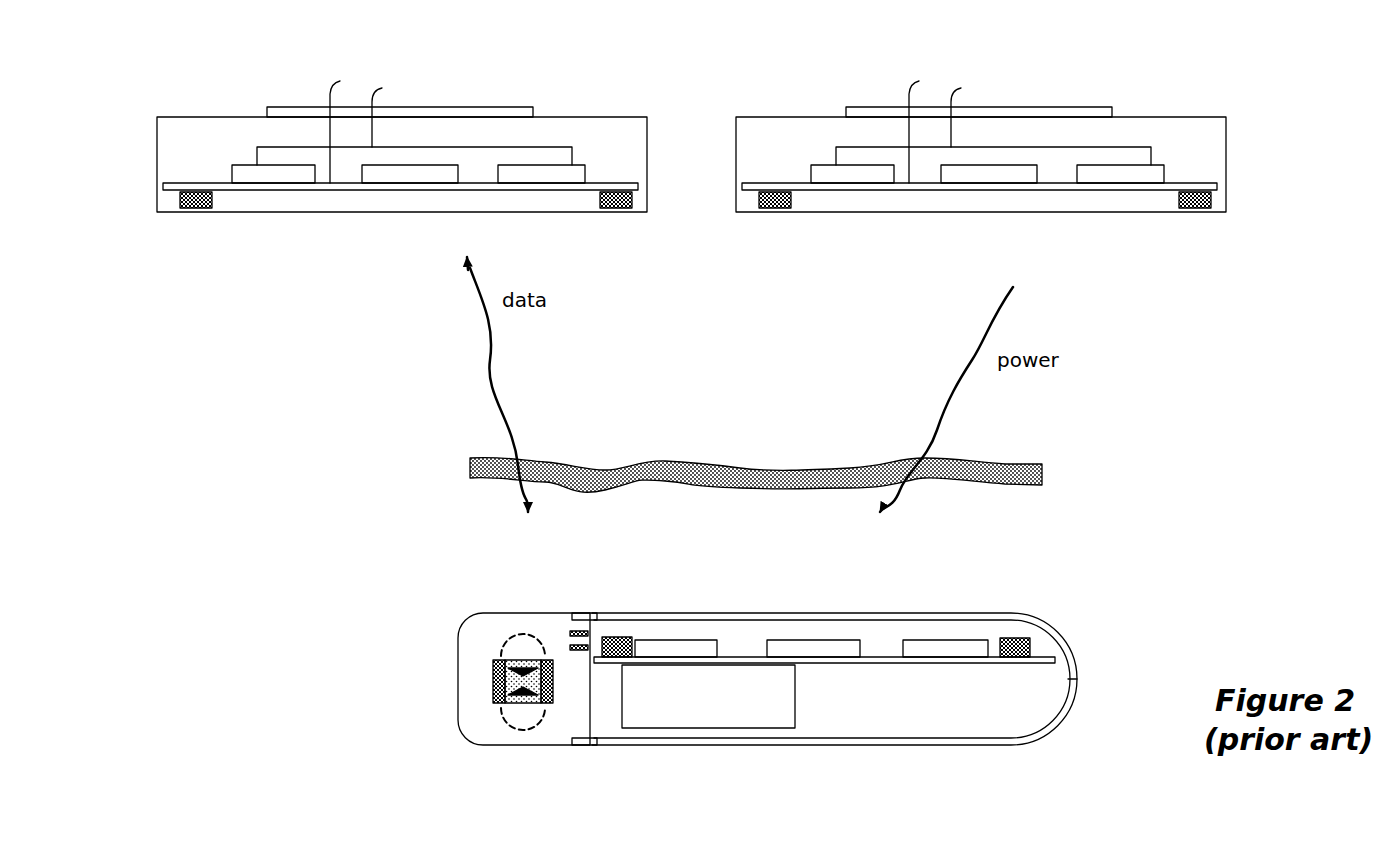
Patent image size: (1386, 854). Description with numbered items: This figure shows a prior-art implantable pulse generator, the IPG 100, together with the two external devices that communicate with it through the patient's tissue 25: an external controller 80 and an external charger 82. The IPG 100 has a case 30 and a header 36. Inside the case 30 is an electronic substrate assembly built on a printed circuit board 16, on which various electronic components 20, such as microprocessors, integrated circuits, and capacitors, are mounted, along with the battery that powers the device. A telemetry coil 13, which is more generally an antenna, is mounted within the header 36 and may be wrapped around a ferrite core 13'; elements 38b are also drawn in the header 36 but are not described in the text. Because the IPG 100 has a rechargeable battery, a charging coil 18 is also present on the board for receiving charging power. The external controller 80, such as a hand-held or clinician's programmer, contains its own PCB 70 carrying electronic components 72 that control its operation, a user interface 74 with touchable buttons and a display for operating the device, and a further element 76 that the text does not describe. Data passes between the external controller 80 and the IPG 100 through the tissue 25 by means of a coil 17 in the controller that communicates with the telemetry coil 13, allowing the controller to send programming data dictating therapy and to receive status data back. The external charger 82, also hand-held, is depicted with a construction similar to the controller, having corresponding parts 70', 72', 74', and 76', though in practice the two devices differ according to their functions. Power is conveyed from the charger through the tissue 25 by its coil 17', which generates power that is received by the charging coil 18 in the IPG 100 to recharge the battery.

The external controller 80 is at (228, 64).
The external charger 82 is at (986, 133).
The PCB 70 is at (347, 128).
The wire lead 76 is at (391, 115).
The user interface 74 is at (400, 88).
The electronic components 72 is at (413, 152).
The coil (antenna) 17 is at (406, 210).
The wire lead 70' is at (929, 128).
The wire lead 76' is at (973, 115).
The top plate / cover 74' is at (979, 88).
The electronic component 72' is at (995, 152).
The coil (antenna) 17' is at (986, 210).
The tissue 25 is at (710, 468).
The IPG 100 is at (438, 790).
The header 36 is at (490, 612).
The antenna / coil winding 38b is at (515, 633).
The telemetry coil 13 is at (501, 699).
The ferrite core 13' is at (507, 671).
The case 30 is at (640, 745).
The printed circuit board (PCB) 16 is at (875, 660).
The charging coil 18 is at (610, 637).
The electronic components 20 is at (680, 645).